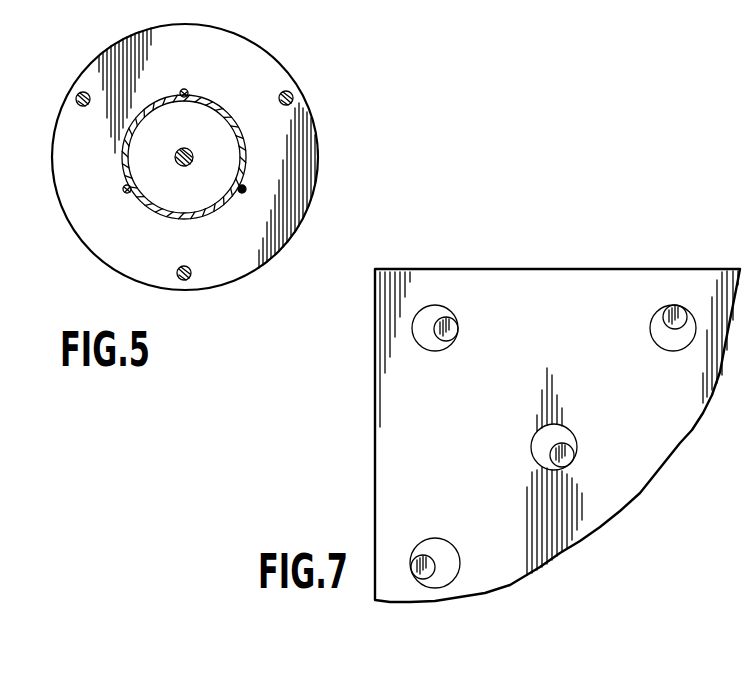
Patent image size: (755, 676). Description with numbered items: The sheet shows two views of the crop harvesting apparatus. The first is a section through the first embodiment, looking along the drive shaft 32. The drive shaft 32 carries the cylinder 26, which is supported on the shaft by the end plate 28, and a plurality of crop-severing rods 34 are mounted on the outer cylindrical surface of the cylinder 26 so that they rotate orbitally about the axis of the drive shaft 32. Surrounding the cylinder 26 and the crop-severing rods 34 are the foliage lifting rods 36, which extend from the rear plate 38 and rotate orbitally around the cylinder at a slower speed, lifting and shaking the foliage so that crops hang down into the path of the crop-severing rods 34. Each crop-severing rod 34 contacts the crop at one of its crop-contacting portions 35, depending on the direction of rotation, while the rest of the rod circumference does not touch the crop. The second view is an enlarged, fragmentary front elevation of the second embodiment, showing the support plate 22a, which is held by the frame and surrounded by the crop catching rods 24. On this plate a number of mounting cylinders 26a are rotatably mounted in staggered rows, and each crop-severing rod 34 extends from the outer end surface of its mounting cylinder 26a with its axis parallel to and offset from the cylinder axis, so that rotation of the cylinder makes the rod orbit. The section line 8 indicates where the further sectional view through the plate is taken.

In FIG. 5, the rear plate 38 is at (121, 52).
In FIG. 5, the foliage lifting rods 36 is at (77, 97).
In FIG. 5, the crop-contacting portions 35 is at (180, 92).
In FIG. 7, the crop-contacting portions 35 is at (448, 317).
In FIG. 5, the crop-severing rods 34 is at (187, 91).
In FIG. 7, the crop-severing rods 34 is at (458, 329).
In FIG. 5, the drive shaft 32 is at (189, 149).
In FIG. 5, the end plate 28 is at (236, 161).
In FIG. 5, the cylinder 26 is at (244, 107).
In FIG. 7, the mounting cylinder 26a is at (420, 344).
In FIG. 7, the support plate 22a is at (553, 283).
In FIG. 7, the crop catching rods 24 is at (742, 288).
In FIG. 7, the section line 8- 8 is at (662, 204).